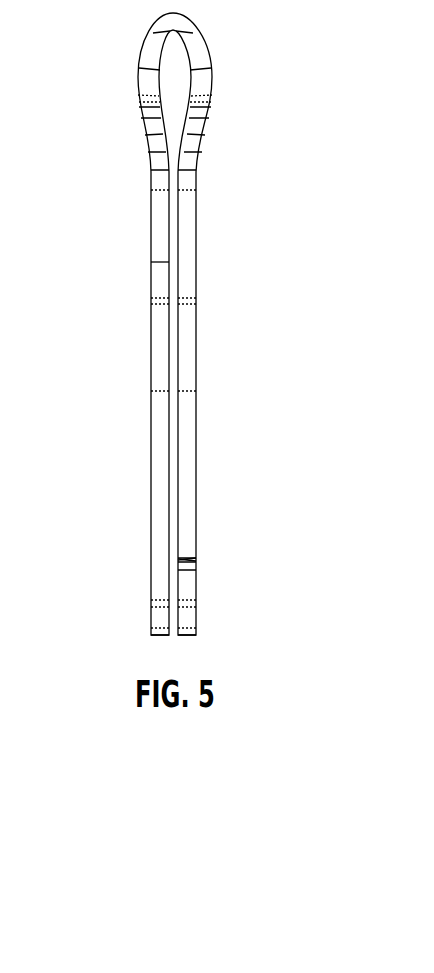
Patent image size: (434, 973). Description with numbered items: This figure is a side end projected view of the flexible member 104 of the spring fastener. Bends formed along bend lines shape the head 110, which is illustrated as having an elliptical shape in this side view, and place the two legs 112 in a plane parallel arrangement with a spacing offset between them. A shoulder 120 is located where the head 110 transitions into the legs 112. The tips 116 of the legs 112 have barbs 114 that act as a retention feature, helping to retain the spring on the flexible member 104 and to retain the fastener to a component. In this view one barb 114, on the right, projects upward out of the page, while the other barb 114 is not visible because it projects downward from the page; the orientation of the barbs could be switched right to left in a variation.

The flexible member 104 is at (233, 273).
The head 110 is at (213, 77).
The legs 112 is at (151, 345).
The barbs 114 is at (195, 563).
The tips 116 is at (152, 623).
The shoulder 120 is at (150, 135).